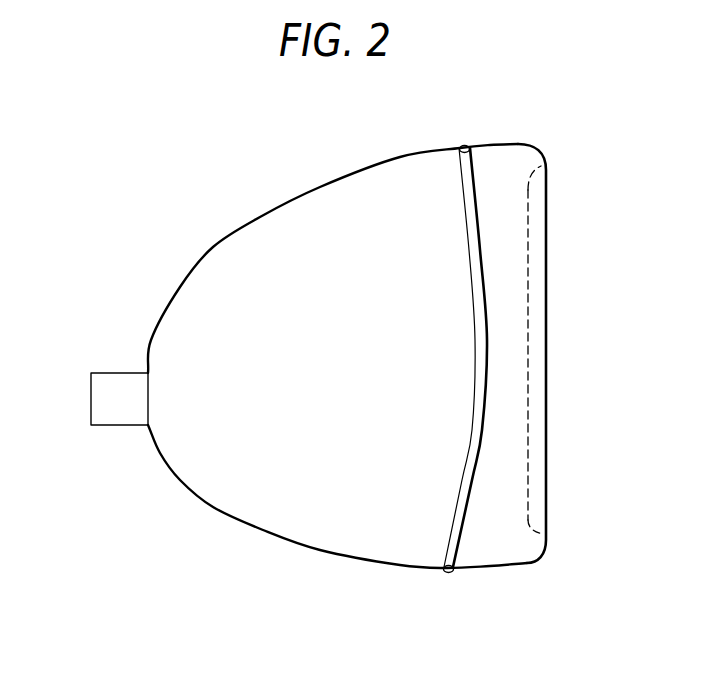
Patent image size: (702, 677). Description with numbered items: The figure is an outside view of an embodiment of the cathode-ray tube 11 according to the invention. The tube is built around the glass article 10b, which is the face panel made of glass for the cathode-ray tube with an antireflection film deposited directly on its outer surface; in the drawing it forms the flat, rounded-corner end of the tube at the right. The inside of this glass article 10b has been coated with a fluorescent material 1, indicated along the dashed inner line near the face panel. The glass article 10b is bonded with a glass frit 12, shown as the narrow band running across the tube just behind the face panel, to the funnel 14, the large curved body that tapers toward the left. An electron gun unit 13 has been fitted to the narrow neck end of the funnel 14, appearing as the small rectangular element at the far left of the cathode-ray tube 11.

The cathode-ray tube 11 is at (335, 355).
The funnel 14 is at (353, 184).
The glass frit 12 is at (464, 146).
The glass article 10b is at (520, 144).
The electron gun unit 13 is at (118, 377).
The fluorescent material 1 is at (528, 500).